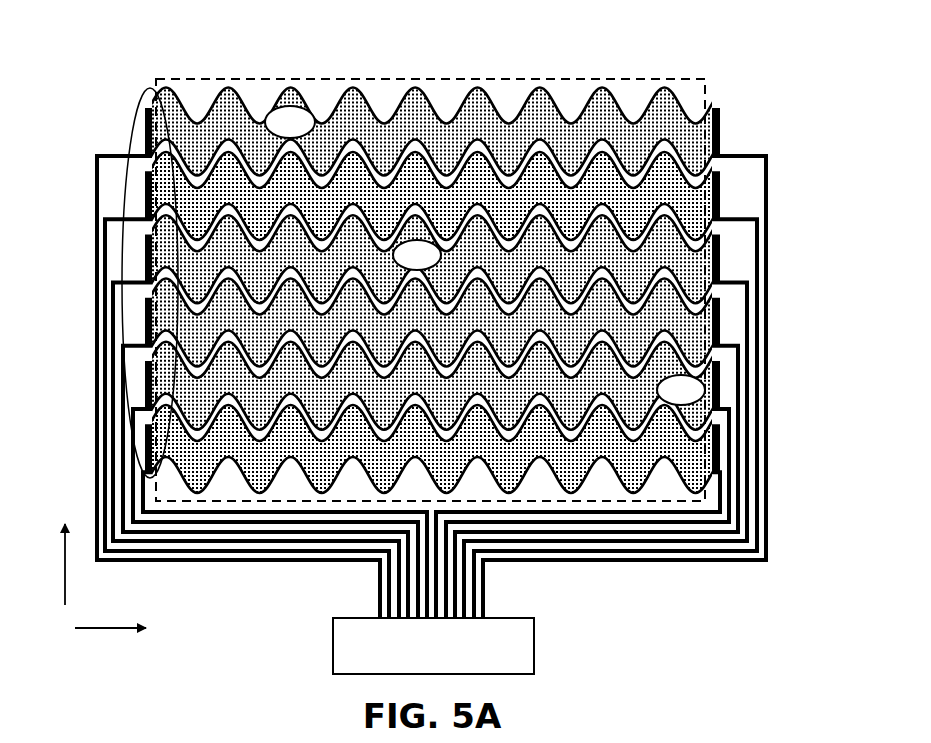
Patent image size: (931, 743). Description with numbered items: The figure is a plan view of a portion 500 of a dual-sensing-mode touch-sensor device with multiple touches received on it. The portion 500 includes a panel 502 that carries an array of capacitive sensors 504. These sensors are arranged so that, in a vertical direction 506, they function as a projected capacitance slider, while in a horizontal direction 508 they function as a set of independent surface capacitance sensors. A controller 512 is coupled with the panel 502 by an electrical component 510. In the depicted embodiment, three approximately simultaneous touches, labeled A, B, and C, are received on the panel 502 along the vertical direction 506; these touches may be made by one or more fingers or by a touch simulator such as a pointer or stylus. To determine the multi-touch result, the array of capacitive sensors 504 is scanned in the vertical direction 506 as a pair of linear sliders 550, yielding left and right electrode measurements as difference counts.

The portion of a touch-sensor device 500 is at (550, 40).
The panel 502 is at (628, 90).
The array of capacitive sensors 504 is at (677, 190).
The vertical direction 506 is at (87, 564).
The horizontal direction 508 is at (110, 646).
The electrical component 510 is at (587, 556).
The controller 512 is at (433, 646).
The linear sliders 550 is at (140, 94).